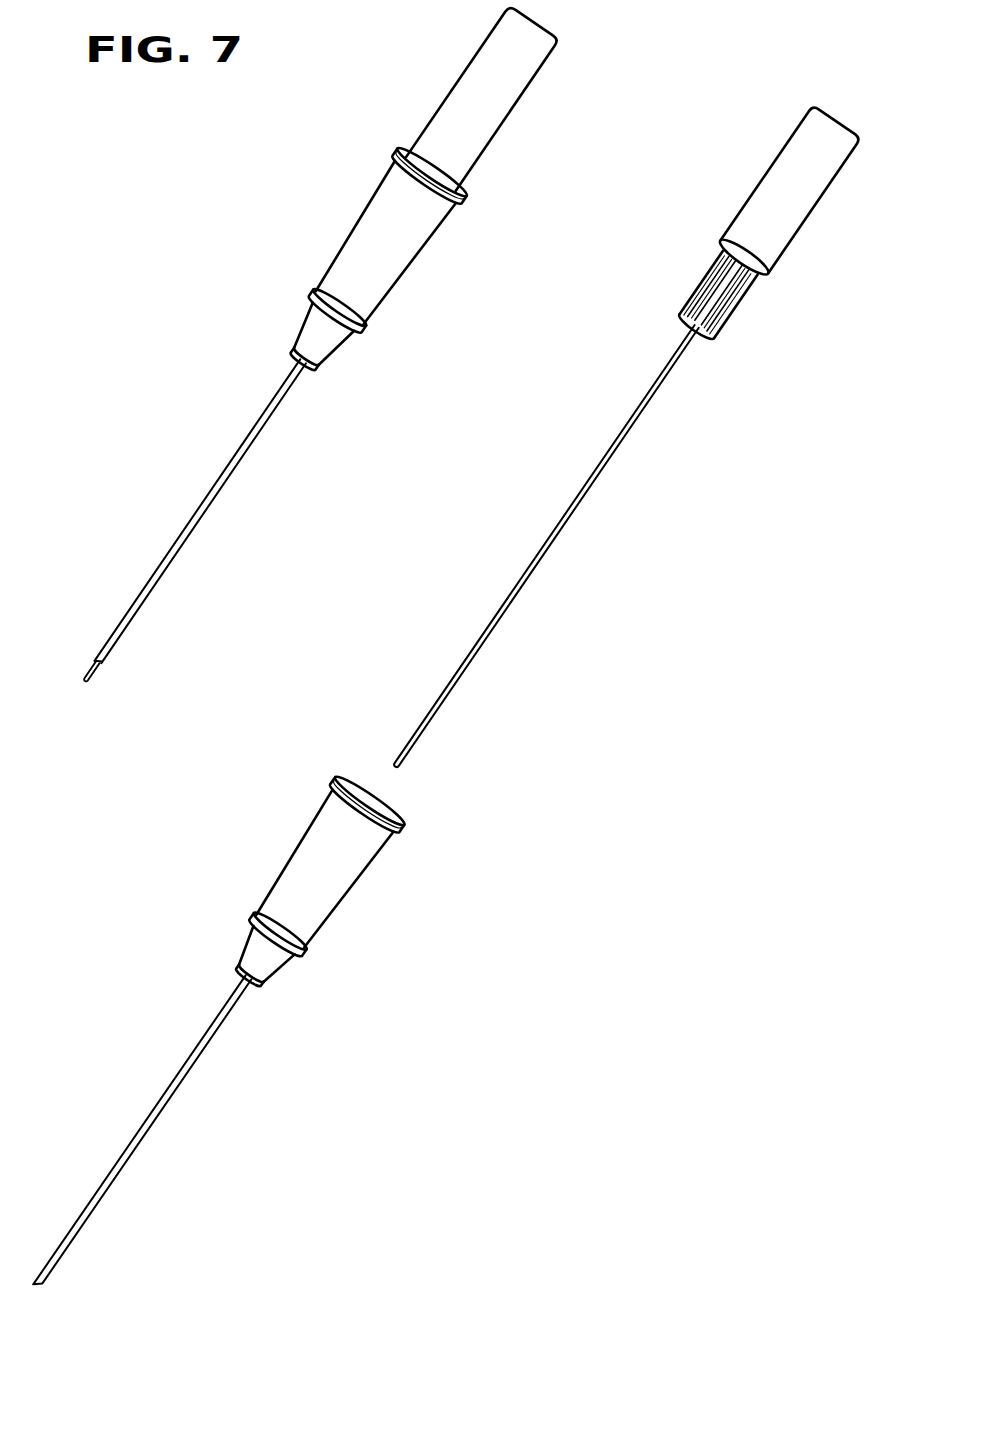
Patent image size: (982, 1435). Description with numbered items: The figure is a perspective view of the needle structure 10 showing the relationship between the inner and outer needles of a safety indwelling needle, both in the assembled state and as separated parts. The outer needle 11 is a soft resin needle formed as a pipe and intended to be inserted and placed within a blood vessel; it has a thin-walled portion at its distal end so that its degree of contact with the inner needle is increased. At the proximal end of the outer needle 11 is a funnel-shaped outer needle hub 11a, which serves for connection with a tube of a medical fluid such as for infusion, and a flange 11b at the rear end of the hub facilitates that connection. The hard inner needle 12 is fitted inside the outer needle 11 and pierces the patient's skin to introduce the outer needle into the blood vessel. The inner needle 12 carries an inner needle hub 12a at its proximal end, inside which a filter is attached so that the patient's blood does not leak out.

The needle structure 10 is at (205, 322).
The outer needle 11 is at (141, 1143).
The outer needle hub 11a is at (348, 898).
The flange 11b is at (407, 823).
The inner needle 12 is at (525, 582).
The inner needle hub 12a is at (760, 295).